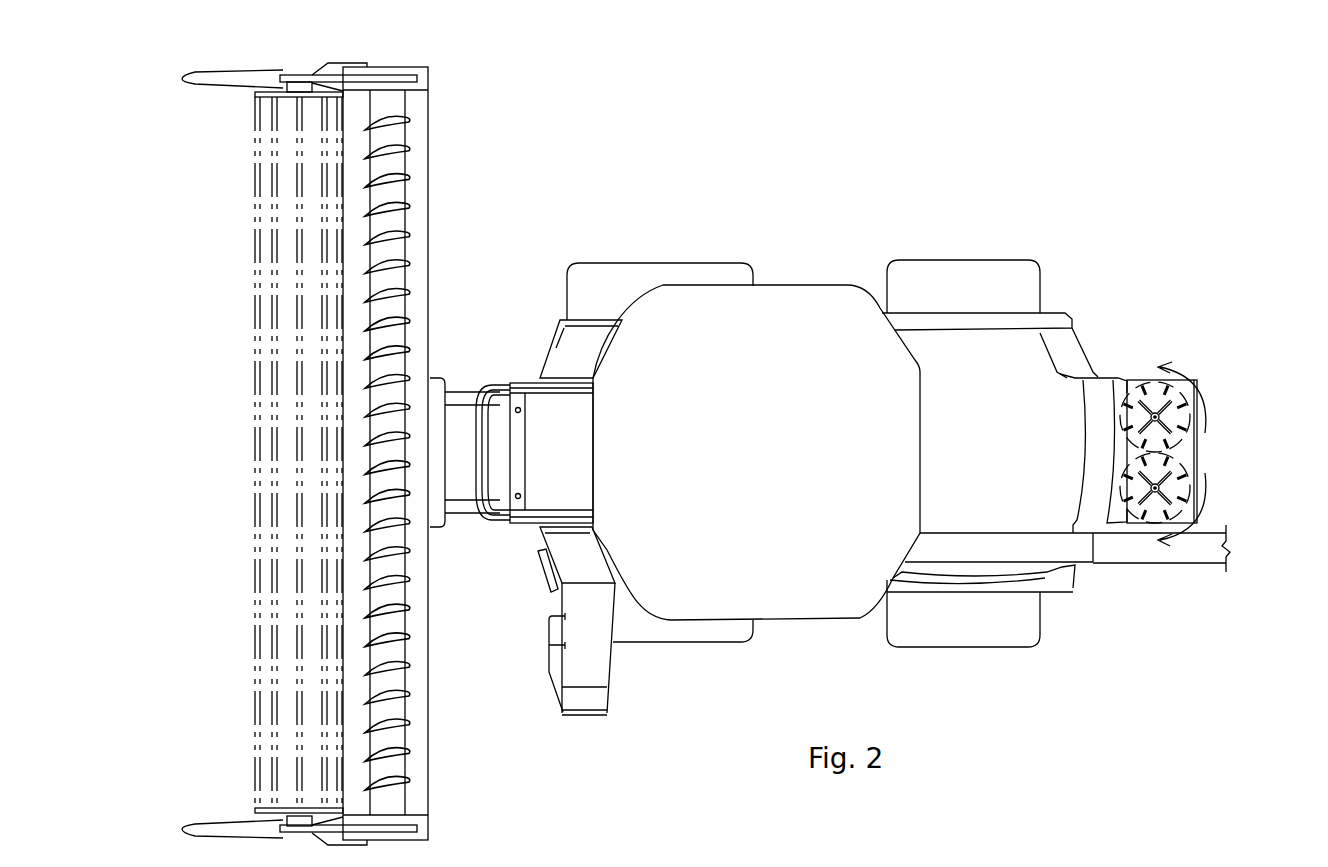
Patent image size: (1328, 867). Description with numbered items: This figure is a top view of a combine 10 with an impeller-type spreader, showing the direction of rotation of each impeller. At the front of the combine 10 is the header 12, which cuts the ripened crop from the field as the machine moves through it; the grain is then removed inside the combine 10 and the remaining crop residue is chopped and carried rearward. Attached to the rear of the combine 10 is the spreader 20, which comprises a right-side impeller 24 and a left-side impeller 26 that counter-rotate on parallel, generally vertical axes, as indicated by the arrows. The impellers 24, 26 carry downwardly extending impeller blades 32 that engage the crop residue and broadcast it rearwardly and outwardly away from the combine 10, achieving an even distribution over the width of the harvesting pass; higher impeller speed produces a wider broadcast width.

The combine 10 is at (769, 466).
The header 12 is at (428, 745).
The spreader 20 is at (1212, 458).
The right-side impeller 24 is at (1180, 415).
The left-side impeller 26 is at (1178, 508).
The impeller blades 32 is at (1158, 390).